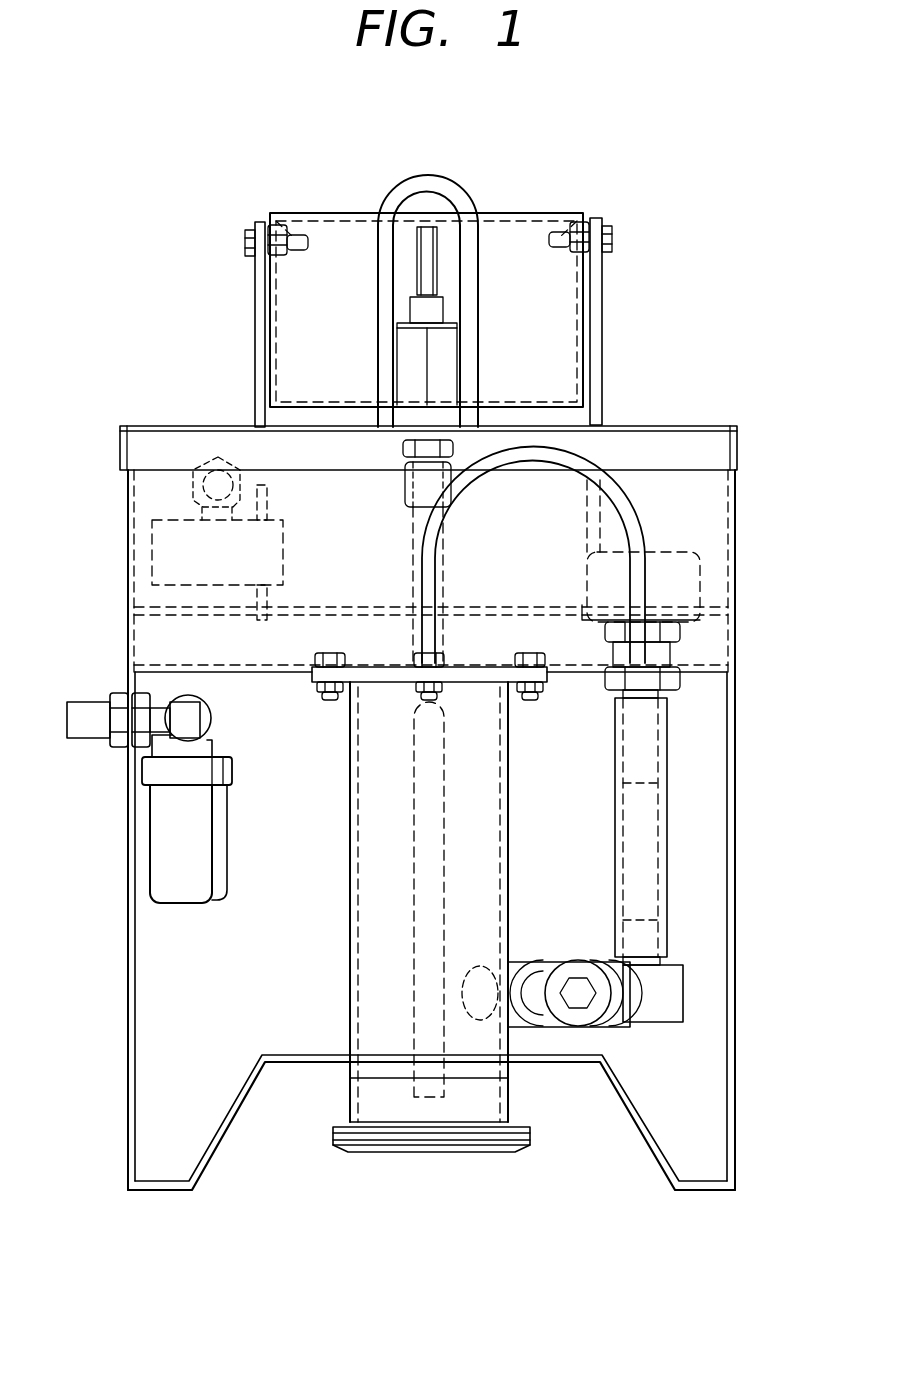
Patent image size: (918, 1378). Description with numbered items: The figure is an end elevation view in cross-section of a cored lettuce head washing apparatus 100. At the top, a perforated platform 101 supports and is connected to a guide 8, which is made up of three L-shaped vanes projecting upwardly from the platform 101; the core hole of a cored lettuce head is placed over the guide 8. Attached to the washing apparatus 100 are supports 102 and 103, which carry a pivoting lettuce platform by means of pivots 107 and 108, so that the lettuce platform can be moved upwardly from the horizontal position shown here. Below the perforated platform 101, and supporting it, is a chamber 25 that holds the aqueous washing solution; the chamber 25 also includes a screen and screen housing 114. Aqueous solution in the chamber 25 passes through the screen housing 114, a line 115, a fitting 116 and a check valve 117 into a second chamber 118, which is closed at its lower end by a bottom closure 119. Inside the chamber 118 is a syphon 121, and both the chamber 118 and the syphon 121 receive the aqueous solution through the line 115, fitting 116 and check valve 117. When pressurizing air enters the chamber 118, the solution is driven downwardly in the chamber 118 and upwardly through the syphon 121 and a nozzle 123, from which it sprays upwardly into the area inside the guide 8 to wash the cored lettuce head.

The guide 8 is at (430, 175).
The chamber 25 is at (130, 557).
The lettuce head washing apparatus 100 is at (130, 1078).
The perforated platform 101 is at (175, 428).
The support 102 is at (603, 332).
The support 103 is at (257, 333).
The pivot 107 is at (608, 218).
The pivot 108 is at (248, 228).
The screen and screen housing 114 is at (700, 557).
The line 115 is at (668, 765).
The fitting 116 is at (690, 968).
The check valve 117 is at (570, 1028).
The chamber 118 is at (352, 973).
The bottom closure 119 is at (508, 1153).
The syphon 121 is at (430, 1098).
The nozzle 123 is at (463, 443).